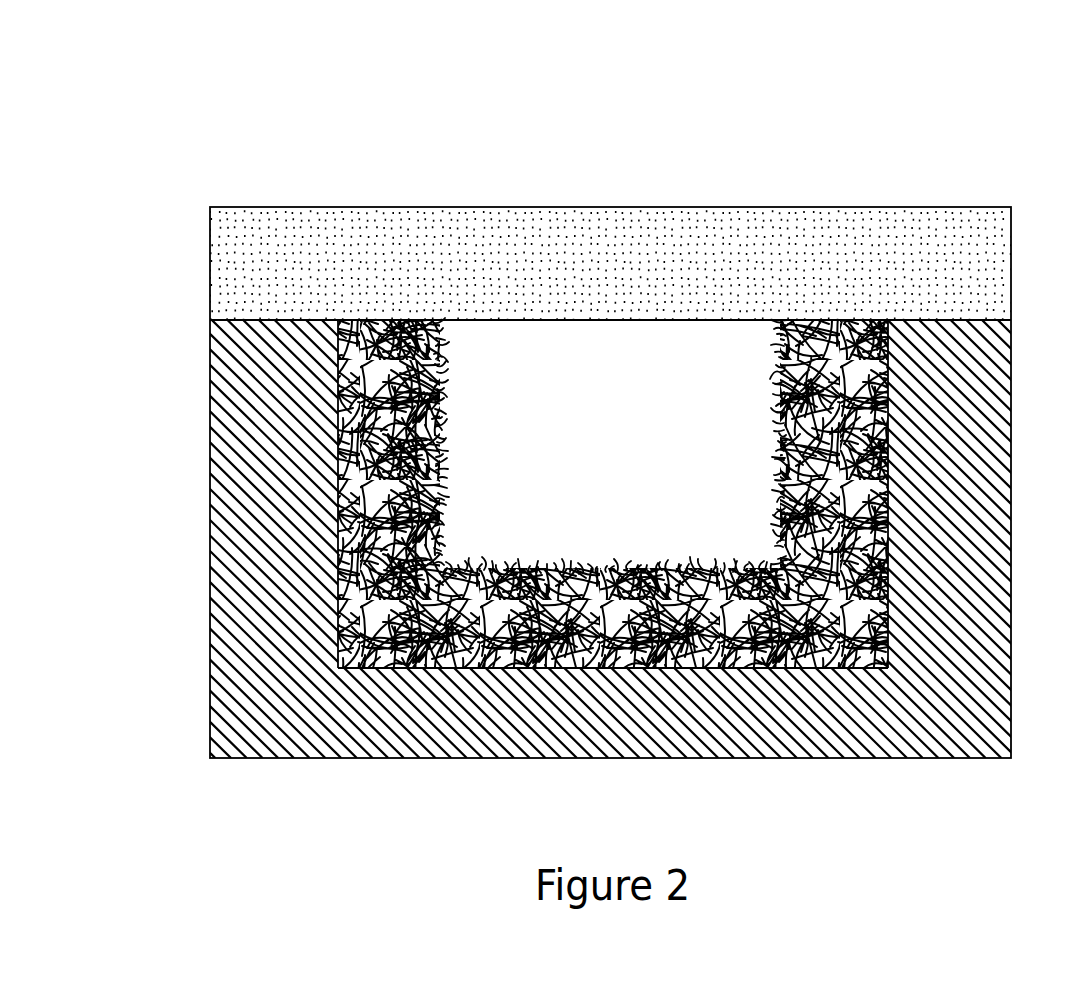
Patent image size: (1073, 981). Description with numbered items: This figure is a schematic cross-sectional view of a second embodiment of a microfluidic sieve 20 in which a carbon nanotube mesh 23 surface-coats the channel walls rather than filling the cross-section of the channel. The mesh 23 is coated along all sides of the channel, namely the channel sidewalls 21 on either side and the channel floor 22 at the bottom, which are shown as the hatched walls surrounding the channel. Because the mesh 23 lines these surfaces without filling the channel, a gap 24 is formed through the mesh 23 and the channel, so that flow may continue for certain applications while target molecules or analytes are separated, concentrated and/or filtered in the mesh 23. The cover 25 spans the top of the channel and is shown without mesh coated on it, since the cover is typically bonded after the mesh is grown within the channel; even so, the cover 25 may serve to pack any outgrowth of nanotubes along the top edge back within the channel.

The microfluidic sieve 20 is at (949, 110).
The channel sidewalls 21 is at (208, 447).
The channel floor 22 is at (350, 758).
The carbon nanotube mesh 23 is at (526, 541).
The gap 24 is at (635, 402).
The cover 25 is at (610, 208).